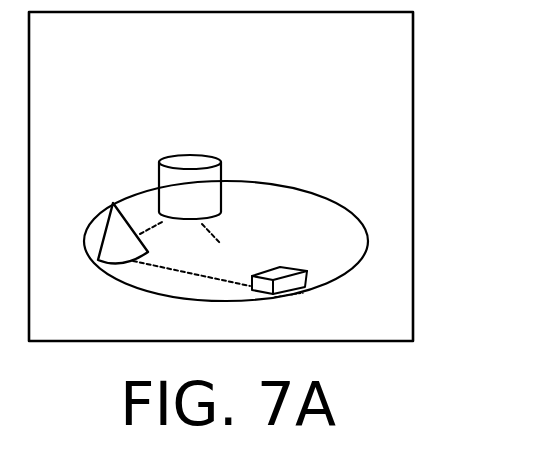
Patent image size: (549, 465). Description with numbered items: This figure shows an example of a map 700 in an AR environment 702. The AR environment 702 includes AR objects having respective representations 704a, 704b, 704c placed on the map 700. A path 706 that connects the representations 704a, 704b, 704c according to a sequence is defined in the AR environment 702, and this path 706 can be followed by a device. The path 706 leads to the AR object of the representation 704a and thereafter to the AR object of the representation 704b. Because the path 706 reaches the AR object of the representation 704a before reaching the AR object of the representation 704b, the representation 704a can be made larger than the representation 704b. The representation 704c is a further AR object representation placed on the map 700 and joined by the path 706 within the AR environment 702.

The map 700 is at (298, 188).
The AR environment 702 is at (413, 96).
The representation 704a is at (188, 155).
The representation 704b is at (113, 203).
The representation 704c is at (288, 270).
The path 706 is at (183, 255).